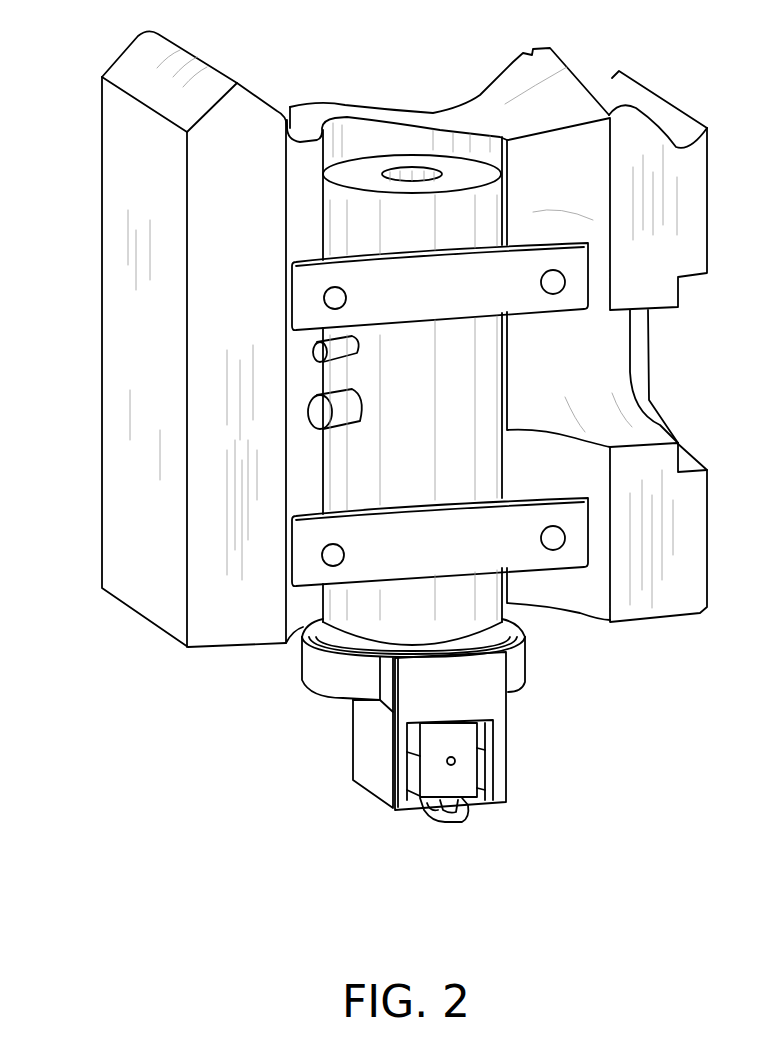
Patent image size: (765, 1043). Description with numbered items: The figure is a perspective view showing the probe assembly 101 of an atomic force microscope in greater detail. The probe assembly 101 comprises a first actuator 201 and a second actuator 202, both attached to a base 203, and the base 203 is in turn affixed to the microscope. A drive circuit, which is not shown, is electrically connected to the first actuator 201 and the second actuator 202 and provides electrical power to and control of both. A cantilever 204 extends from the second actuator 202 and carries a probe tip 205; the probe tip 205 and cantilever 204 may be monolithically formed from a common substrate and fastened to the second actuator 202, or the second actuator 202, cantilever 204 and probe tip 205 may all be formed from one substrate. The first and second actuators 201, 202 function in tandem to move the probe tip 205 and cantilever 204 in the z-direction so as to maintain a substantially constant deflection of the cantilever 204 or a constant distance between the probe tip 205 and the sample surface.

The probe assembly 101 is at (411, 40).
The first actuator 201 is at (365, 470).
The second actuator 202 is at (353, 742).
The base 203 is at (125, 184).
The cantilever 204 is at (468, 815).
The probe tip 205 is at (460, 830).